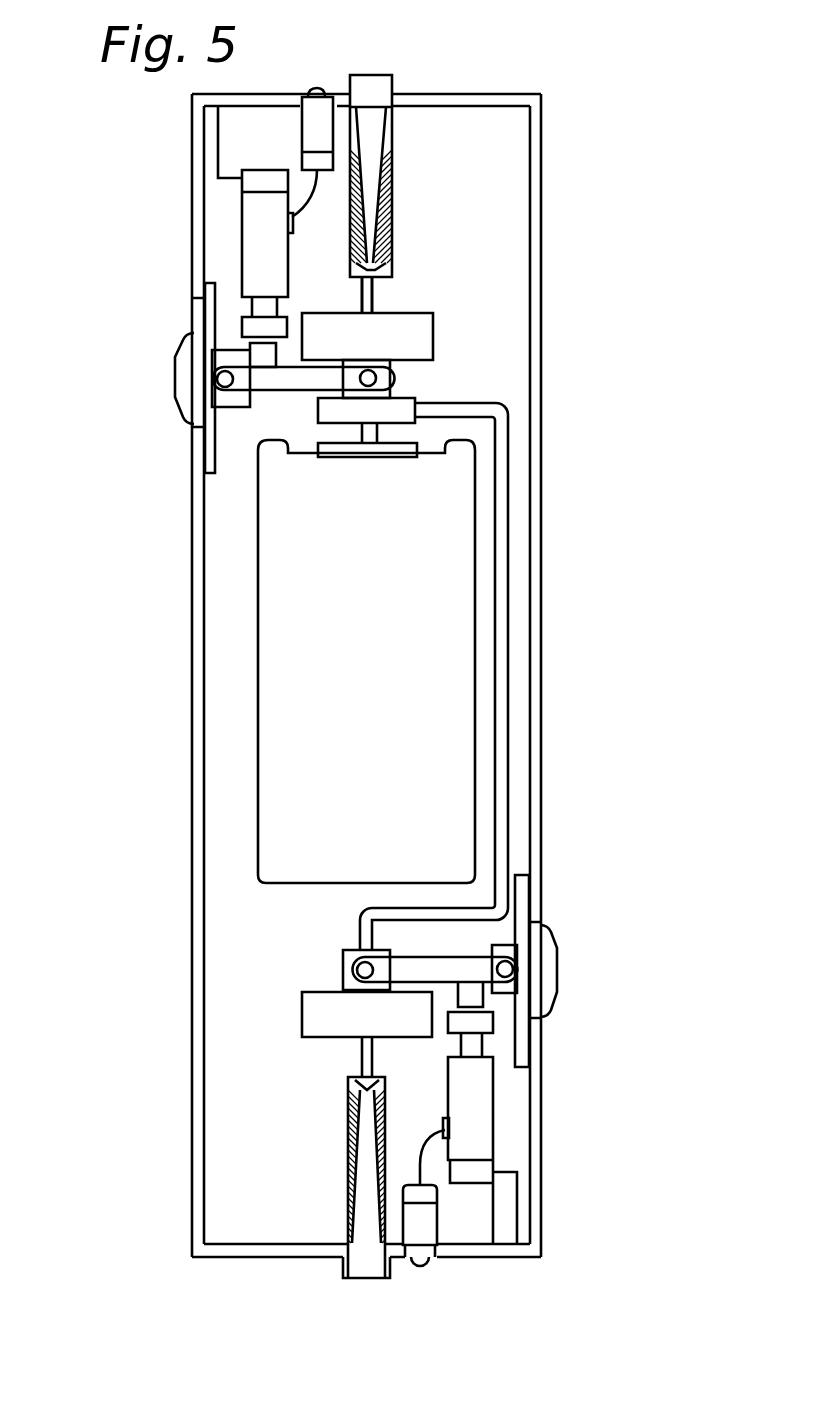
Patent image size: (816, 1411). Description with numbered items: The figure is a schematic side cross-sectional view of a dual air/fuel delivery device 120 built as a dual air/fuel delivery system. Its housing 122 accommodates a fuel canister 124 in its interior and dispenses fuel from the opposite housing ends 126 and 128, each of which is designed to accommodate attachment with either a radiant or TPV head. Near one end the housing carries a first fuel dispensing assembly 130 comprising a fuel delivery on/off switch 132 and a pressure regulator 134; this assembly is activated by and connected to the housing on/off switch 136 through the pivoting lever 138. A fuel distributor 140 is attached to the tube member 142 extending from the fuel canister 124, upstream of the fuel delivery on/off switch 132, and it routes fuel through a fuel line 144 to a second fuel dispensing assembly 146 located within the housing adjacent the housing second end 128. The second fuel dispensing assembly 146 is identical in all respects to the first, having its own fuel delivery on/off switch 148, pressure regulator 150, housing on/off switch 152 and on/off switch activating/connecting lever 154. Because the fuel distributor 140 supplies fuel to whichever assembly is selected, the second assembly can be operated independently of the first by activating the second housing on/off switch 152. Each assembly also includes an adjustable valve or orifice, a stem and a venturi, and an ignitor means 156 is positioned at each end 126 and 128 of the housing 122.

The dual air/fuel delivery device 120 is at (564, 90).
The housing 122 is at (186, 671).
The fuel canister 124 is at (393, 713).
The housing first end 126 is at (433, 100).
The housing second end 128 is at (482, 1253).
The first fuel dispensing assembly 130 is at (472, 305).
The fuel delivery on/off switch 132 is at (388, 378).
The pressure regulator 134 is at (423, 338).
The housing on/off switch 136 is at (185, 363).
The pivoting lever 138 is at (266, 384).
The fuel distributor 140 is at (380, 408).
The tube member 142 is at (362, 432).
The fuel line 144 is at (500, 648).
The second fuel dispensing assembly 146 is at (288, 978).
The fuel delivery on/off switch 148 is at (343, 960).
The pressure regulator 150 is at (313, 1007).
The housing on/off switch 152 is at (543, 968).
The on/off switch activating/connecting lever 154 is at (455, 968).
The ignitor means 156 is at (246, 220).